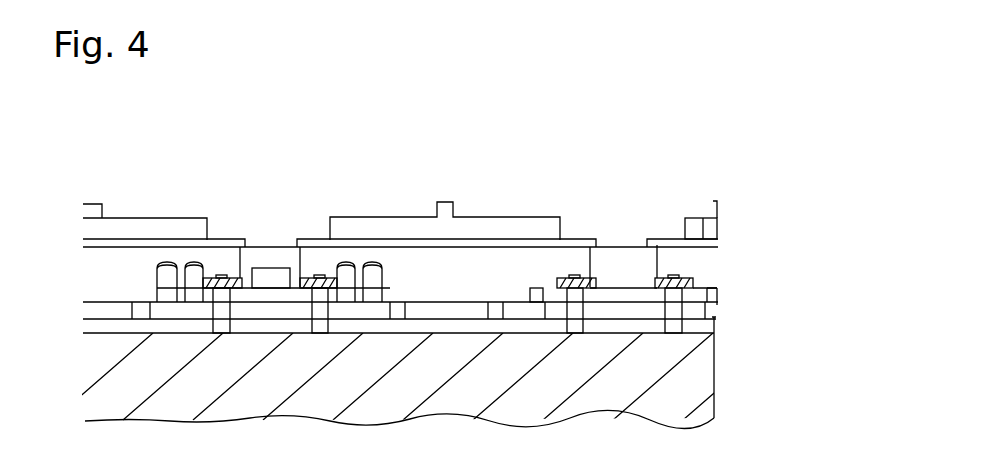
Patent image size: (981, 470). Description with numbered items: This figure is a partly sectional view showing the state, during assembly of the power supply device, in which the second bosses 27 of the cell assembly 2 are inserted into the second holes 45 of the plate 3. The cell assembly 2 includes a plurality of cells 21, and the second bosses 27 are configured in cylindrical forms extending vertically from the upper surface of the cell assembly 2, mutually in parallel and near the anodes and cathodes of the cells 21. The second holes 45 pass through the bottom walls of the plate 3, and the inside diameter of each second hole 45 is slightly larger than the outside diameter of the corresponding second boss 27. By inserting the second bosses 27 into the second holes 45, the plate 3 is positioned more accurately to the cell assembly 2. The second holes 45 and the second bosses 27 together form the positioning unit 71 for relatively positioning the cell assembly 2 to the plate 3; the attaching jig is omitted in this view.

The cell assembly 2 is at (722, 357).
The plate 3 is at (489, 213).
The cell 21 is at (680, 387).
The second boss 27 is at (222, 296).
The second hole 45 is at (240, 283).
The positioning unit 71 is at (793, 260).